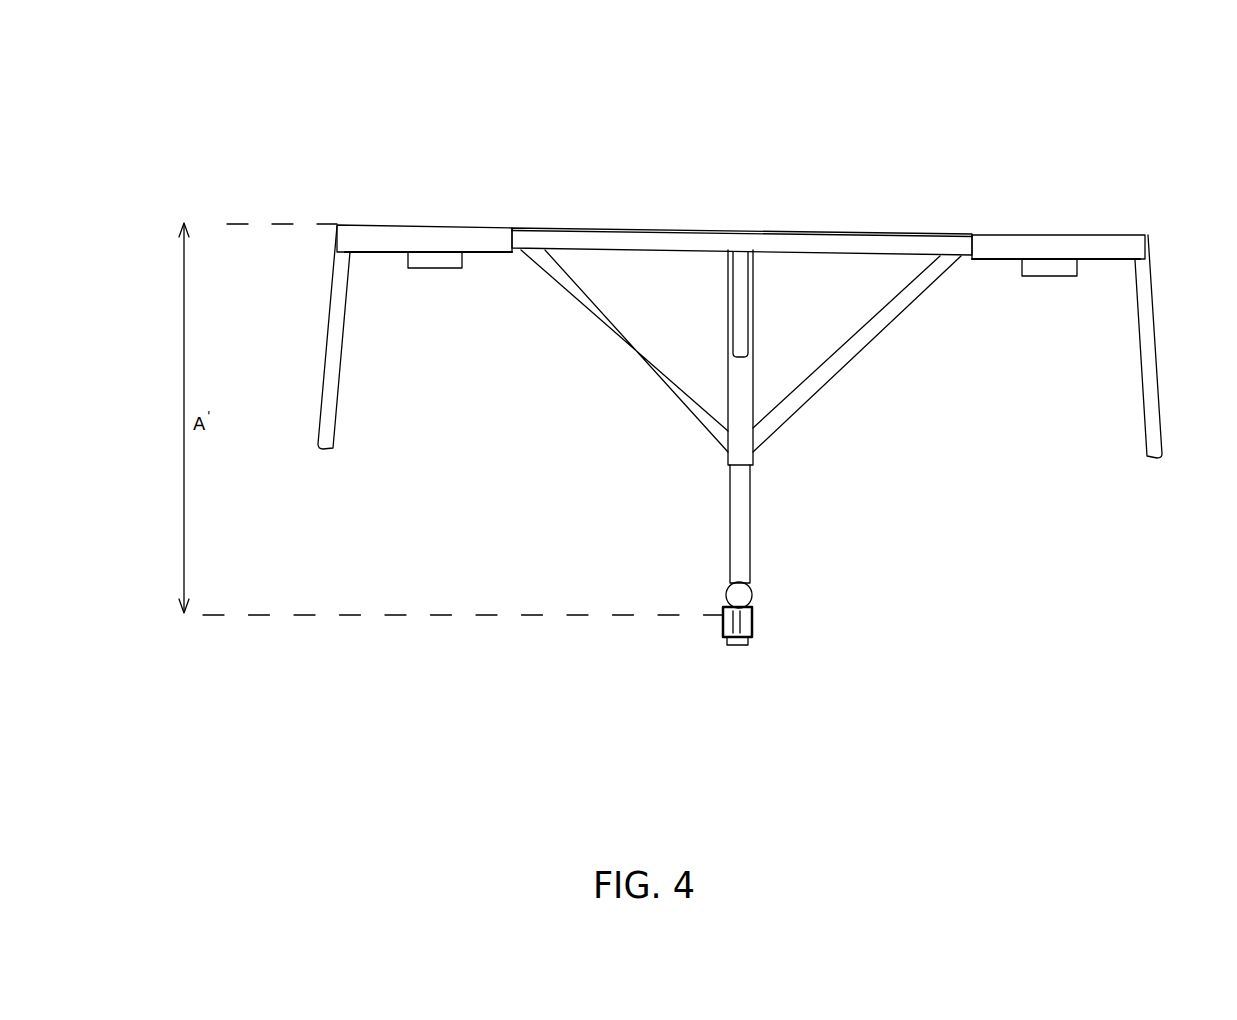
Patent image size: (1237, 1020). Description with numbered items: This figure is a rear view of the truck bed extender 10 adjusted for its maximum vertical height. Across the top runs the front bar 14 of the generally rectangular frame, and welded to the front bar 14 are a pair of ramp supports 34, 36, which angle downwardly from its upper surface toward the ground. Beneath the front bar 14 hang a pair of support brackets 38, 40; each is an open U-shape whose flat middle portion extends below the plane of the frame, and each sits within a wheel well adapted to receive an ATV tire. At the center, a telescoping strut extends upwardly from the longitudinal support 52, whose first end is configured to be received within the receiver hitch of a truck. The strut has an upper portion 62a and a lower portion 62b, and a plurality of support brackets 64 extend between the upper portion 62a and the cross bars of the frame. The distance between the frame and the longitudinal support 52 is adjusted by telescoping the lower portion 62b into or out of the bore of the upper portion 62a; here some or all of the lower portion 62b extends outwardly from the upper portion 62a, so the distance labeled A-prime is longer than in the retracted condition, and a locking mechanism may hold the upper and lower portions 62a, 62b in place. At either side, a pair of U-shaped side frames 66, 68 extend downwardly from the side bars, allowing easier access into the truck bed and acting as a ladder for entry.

The truck bed extender 10 is at (1142, 158).
The front bar 14 is at (677, 238).
The ramp support 34 is at (373, 240).
The ramp support 36 is at (1103, 250).
The support bracket 38 is at (433, 258).
The support bracket 40 is at (1043, 268).
The longitudinal support 52 is at (752, 622).
The upper portion of strut 62a is at (742, 382).
The lower portion of strut 62b is at (742, 510).
The support brackets 64 is at (637, 358).
The U-shaped side frame 66 is at (330, 398).
The U-shaped side frame 68 is at (1160, 407).